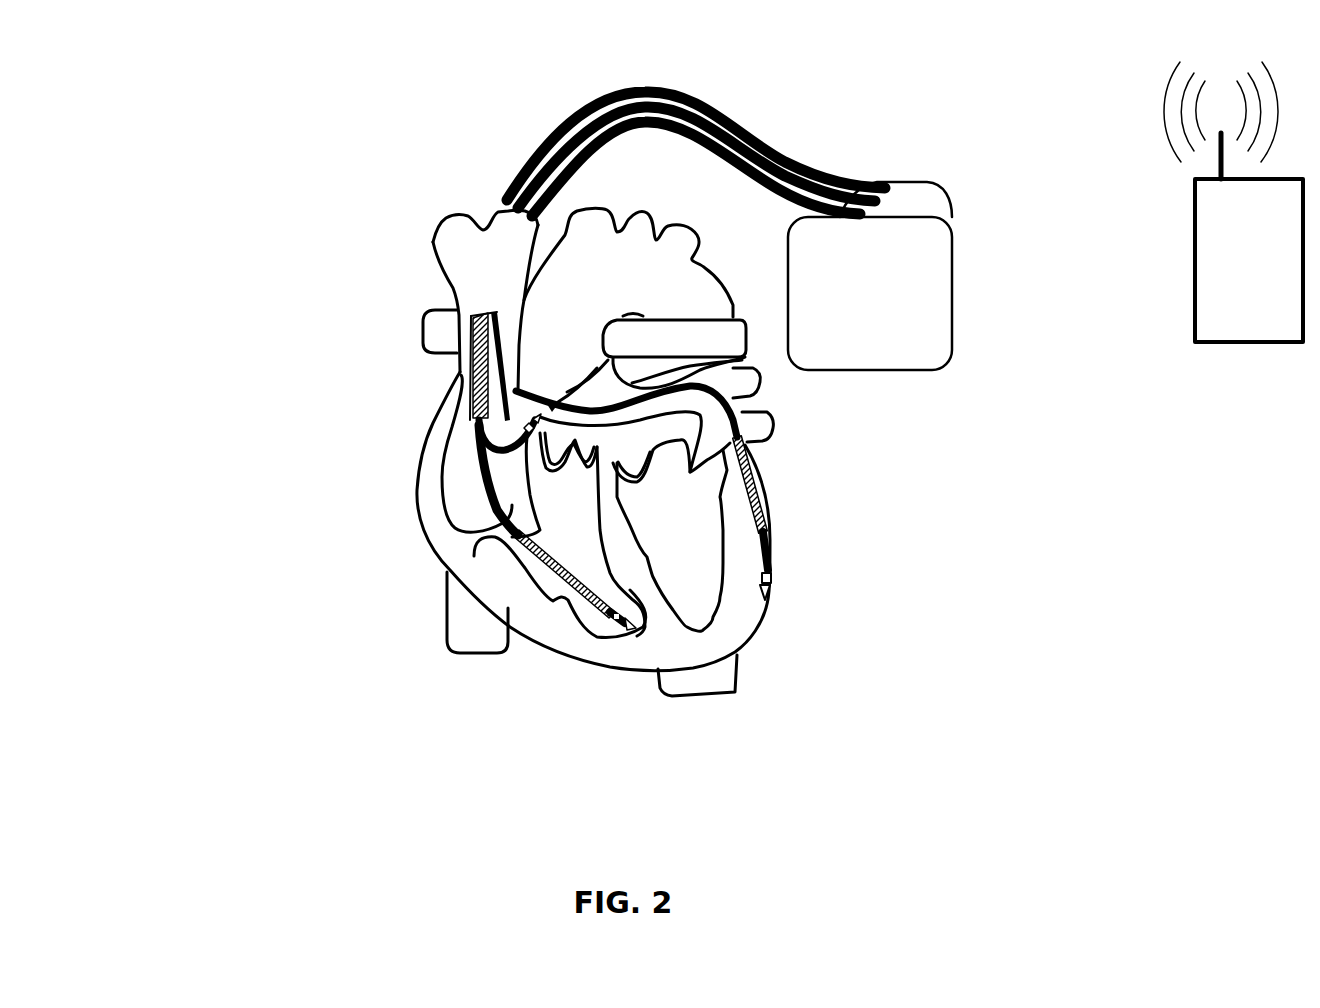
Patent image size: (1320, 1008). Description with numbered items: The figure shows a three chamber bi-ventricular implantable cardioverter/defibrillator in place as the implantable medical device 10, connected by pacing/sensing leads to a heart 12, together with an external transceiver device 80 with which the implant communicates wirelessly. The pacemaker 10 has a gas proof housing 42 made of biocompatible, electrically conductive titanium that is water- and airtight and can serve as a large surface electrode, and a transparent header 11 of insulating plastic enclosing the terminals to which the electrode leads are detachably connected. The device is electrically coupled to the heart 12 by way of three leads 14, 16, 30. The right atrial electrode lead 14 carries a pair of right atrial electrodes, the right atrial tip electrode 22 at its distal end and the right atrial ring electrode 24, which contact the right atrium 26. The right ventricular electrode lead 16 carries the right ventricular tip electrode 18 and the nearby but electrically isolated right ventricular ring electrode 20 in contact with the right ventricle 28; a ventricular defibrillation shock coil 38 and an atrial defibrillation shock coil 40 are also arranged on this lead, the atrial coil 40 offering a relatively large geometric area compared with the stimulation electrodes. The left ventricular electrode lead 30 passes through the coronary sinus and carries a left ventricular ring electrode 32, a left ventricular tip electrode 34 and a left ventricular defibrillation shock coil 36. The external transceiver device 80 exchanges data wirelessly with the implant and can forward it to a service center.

The implantable medical device 10 is at (1010, 347).
The header 11 is at (895, 197).
The heart 12 is at (385, 562).
The right atrial electrode lead 14 is at (613, 107).
The right ventricular electrode lead 16 is at (540, 147).
The right ventricular tip electrode 18 is at (630, 628).
The right ventricular ring electrode 20 is at (613, 625).
The right atrial tip electrode 22 is at (522, 410).
The right atrial ring electrode 24 is at (523, 427).
The right atrium 26 is at (460, 487).
The right ventricle 28 is at (535, 582).
The left ventricular electrode lead 30 is at (757, 193).
The left ventricular ring electrode 32 is at (771, 580).
The left ventricular tip electrode 34 is at (767, 597).
The left ventricular defibrillation shock coil 36 is at (766, 512).
The ventricular defibrillation shock coil 38 is at (533, 555).
The atrial defibrillation shock coil 40 is at (476, 385).
The housing 42 is at (897, 340).
The external transceiver device 80 is at (1251, 347).